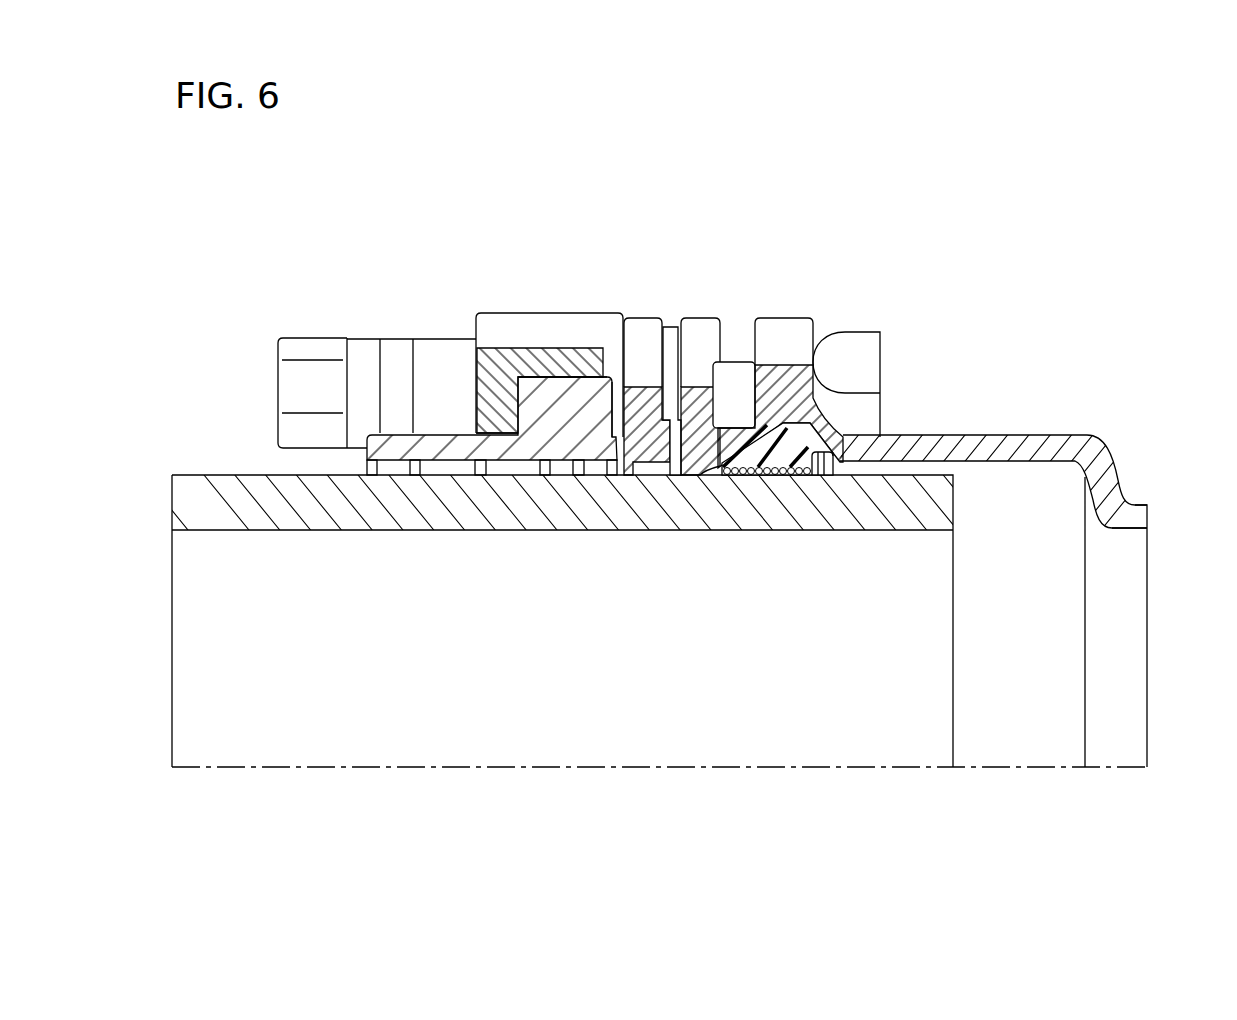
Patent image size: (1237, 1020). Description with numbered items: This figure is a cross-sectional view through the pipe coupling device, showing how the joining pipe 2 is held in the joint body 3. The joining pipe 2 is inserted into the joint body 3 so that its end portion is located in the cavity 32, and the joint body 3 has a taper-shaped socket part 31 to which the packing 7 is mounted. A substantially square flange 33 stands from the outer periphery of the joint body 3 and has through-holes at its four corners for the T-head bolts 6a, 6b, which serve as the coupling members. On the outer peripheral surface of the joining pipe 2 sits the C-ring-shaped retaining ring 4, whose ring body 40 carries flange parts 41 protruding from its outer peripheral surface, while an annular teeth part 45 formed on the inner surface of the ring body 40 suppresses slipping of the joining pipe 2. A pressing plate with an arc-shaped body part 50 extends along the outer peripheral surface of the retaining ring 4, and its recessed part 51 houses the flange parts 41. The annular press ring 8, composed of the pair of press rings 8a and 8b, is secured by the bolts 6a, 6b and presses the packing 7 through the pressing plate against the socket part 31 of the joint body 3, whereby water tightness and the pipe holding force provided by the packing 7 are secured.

The joining pipe 2 is at (953, 607).
The joint body 3 is at (1005, 433).
The retaining ring 4 is at (490, 441).
The T-head bolt 6a is at (852, 340).
The T-head bolt 6b is at (290, 368).
The packing 7 is at (790, 522).
The press ring 8 is at (686, 304).
The press ring 8a is at (697, 318).
The press ring 8b is at (650, 318).
The socket part 31 is at (797, 462).
The cavity 32 is at (1007, 459).
The flange 33 is at (782, 328).
The ring body 40 is at (490, 441).
The flange part 41 is at (552, 393).
The annular teeth part 45 is at (458, 462).
The arc-shaped body part 50 is at (505, 313).
The recessed part 51 is at (580, 400).